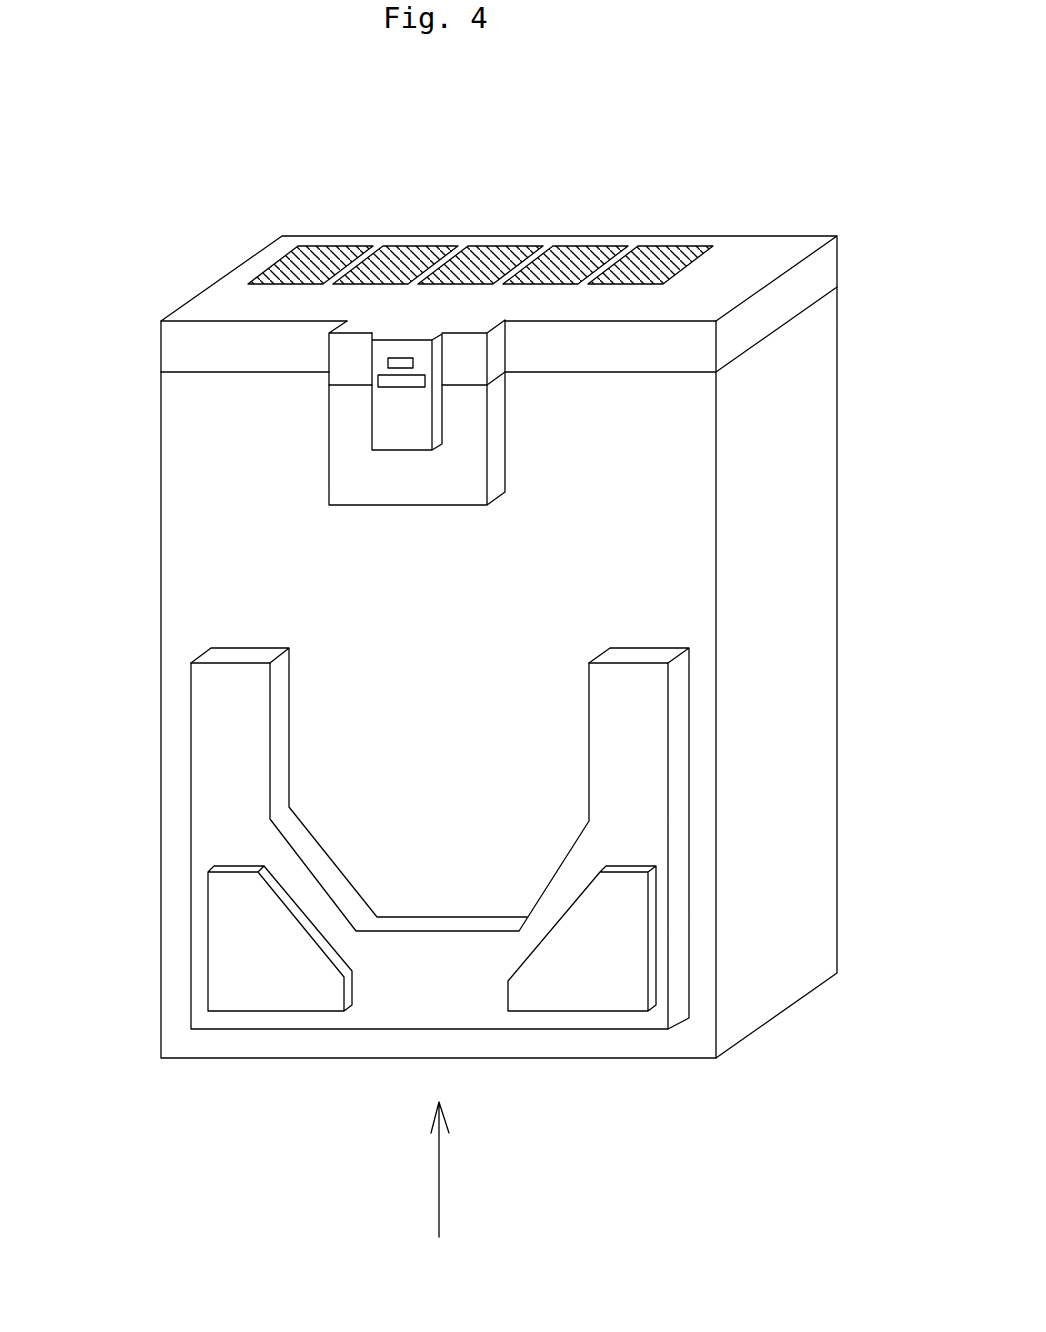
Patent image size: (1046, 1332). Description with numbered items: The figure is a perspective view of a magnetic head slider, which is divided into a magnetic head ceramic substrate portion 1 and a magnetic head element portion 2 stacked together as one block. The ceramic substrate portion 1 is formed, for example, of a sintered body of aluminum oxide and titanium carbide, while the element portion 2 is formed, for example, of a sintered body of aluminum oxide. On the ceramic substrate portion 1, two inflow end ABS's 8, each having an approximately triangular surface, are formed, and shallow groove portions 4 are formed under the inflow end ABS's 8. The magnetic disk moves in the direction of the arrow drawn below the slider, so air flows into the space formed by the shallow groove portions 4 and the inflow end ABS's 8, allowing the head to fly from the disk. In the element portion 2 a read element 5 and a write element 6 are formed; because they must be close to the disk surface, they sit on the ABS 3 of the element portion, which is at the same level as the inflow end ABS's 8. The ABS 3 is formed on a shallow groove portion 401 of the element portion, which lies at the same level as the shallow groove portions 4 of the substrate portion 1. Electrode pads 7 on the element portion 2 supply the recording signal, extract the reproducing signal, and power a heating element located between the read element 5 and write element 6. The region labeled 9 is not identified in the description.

The magnetic head ceramic substrate portion 1 is at (805, 463).
The magnetic head element portion 2 is at (813, 300).
The ABS of the element portion 3 is at (392, 425).
The shallow groove portions 4 is at (232, 737).
The read element 5 is at (420, 378).
The write element 6 is at (390, 358).
The electrode pads 7 is at (403, 262).
The inflow end ABS's 8 is at (232, 938).
The front mounting surface 9 is at (463, 645).
The shallow groove portion of the element portion 401 is at (350, 480).